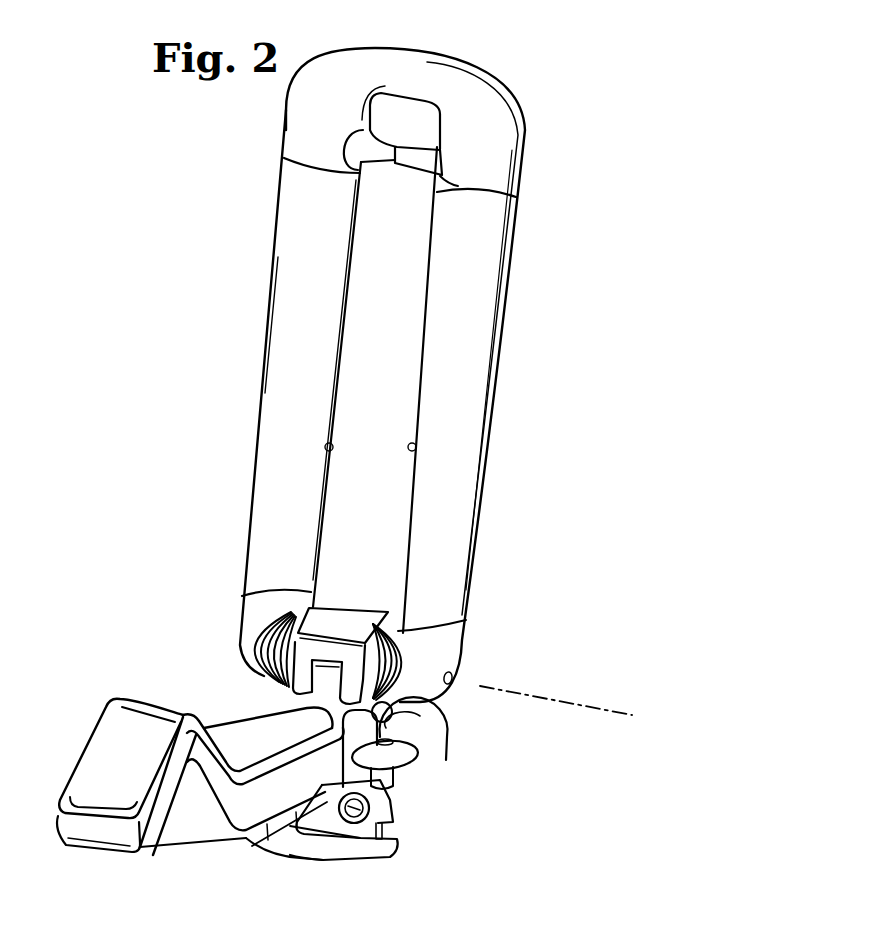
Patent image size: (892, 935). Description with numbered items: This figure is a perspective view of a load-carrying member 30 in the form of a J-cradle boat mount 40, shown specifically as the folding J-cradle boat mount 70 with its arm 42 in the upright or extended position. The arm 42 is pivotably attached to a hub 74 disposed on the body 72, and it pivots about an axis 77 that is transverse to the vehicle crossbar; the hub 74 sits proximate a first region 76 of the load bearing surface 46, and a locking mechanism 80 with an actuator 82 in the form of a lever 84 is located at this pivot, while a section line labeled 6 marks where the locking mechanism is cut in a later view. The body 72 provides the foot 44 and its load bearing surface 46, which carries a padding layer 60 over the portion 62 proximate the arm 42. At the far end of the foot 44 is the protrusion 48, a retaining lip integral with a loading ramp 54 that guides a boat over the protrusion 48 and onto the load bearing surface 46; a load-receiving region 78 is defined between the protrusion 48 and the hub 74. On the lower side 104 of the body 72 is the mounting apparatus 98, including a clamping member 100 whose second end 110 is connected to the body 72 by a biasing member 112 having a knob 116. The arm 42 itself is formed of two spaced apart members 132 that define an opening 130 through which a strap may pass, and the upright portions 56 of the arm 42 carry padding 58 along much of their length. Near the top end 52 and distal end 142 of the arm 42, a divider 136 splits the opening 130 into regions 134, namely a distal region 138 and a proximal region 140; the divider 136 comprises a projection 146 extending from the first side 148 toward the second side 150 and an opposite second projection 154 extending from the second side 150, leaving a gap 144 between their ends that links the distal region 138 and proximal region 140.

The load-carrying member 30 is at (66, 204).
The J-cradle boat mount 40 is at (84, 249).
The folding J-cradle boat mount 70 is at (140, 269).
The arm 42 is at (500, 368).
The top end 52 is at (531, 134).
The spaced apart members 132 is at (292, 226).
The opening 130 is at (367, 314).
The proximal region 140 is at (401, 477).
The distal end 142 is at (366, 38).
The gap 144 is at (399, 140).
The distal region 138 is at (429, 121).
The second projection 154 is at (420, 150).
The divider 136 is at (449, 160).
The projection 146 is at (373, 158).
The regions 134 is at (376, 118).
The upright portions 56 is at (412, 430).
The padding 58 is at (410, 516).
The first side 148 is at (329, 450).
The second side 150 is at (413, 450).
The actuator 82 is at (312, 648).
The lever 84 is at (333, 655).
The section line 6- 6 is at (374, 583).
The hub 74 is at (468, 690).
The axis 77 is at (551, 690).
The locking mechanism 80 is at (459, 721).
The first region 76 is at (280, 712).
The knob 116 is at (415, 783).
The second end 110 is at (388, 870).
The biasing member 112 is at (405, 825).
The mounting apparatus 98 is at (492, 833).
The protrusion 48 is at (114, 692).
The load-receiving region 78 is at (172, 645).
The foot 44 is at (201, 713).
The portion 62 is at (224, 734).
The load bearing surface 46 is at (272, 754).
The loading ramp 54 is at (94, 791).
The body 72 is at (118, 738).
The padding layer 60 is at (242, 722).
The lower side 104 is at (180, 861).
The clamping member 100 is at (254, 848).